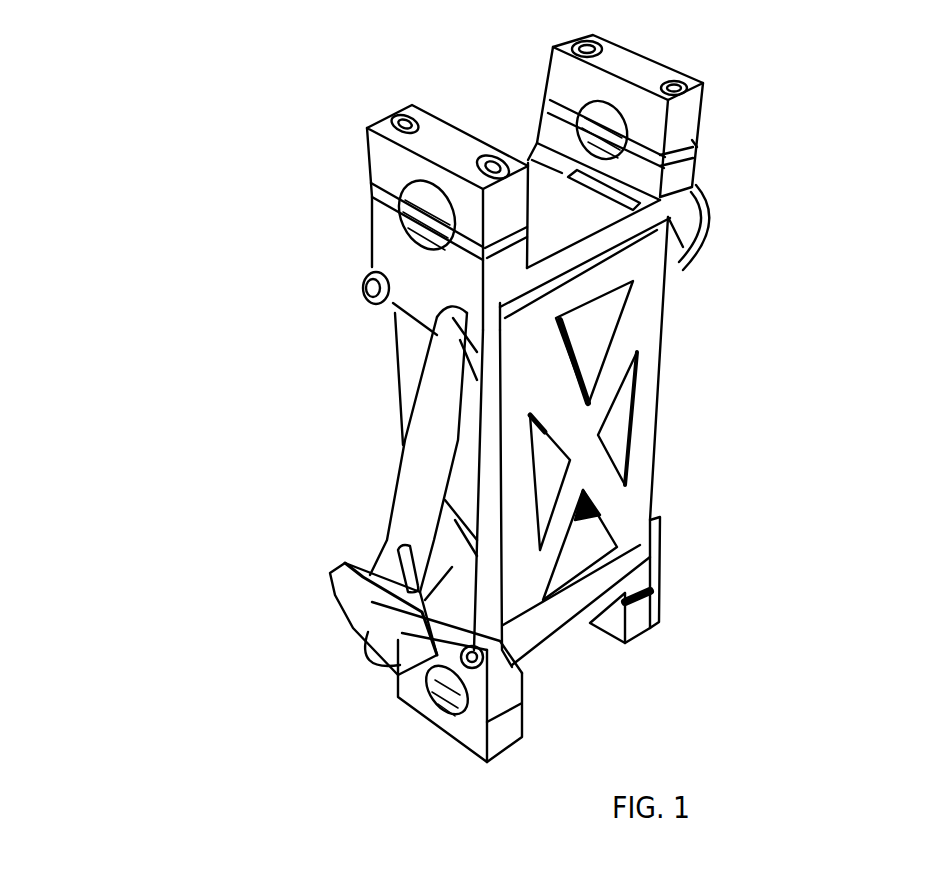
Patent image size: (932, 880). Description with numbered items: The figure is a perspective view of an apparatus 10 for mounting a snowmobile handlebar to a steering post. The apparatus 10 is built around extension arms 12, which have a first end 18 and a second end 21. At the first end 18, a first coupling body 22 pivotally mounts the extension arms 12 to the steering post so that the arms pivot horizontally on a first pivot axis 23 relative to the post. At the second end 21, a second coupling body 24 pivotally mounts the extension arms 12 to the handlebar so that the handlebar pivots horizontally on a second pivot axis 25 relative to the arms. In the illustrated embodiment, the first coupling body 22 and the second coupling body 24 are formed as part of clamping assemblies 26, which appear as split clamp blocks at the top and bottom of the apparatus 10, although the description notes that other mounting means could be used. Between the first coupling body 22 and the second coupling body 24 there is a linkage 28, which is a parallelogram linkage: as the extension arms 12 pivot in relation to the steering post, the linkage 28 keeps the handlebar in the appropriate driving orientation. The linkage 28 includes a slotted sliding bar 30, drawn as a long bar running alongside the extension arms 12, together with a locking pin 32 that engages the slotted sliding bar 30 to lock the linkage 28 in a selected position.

The apparatus 10 is at (247, 198).
The extension arms 12 is at (395, 365).
The first end 18 is at (545, 633).
The second end 21 is at (673, 228).
The first coupling body 22 is at (662, 563).
The first pivot axis 23 is at (463, 667).
The second coupling body 24 is at (690, 168).
The second pivot axis 25 is at (363, 293).
The clamping assemblies 26 is at (695, 143).
The linkage 28 is at (342, 496).
The slotted sliding bar 30 is at (385, 530).
The locking pin 32 is at (357, 635).